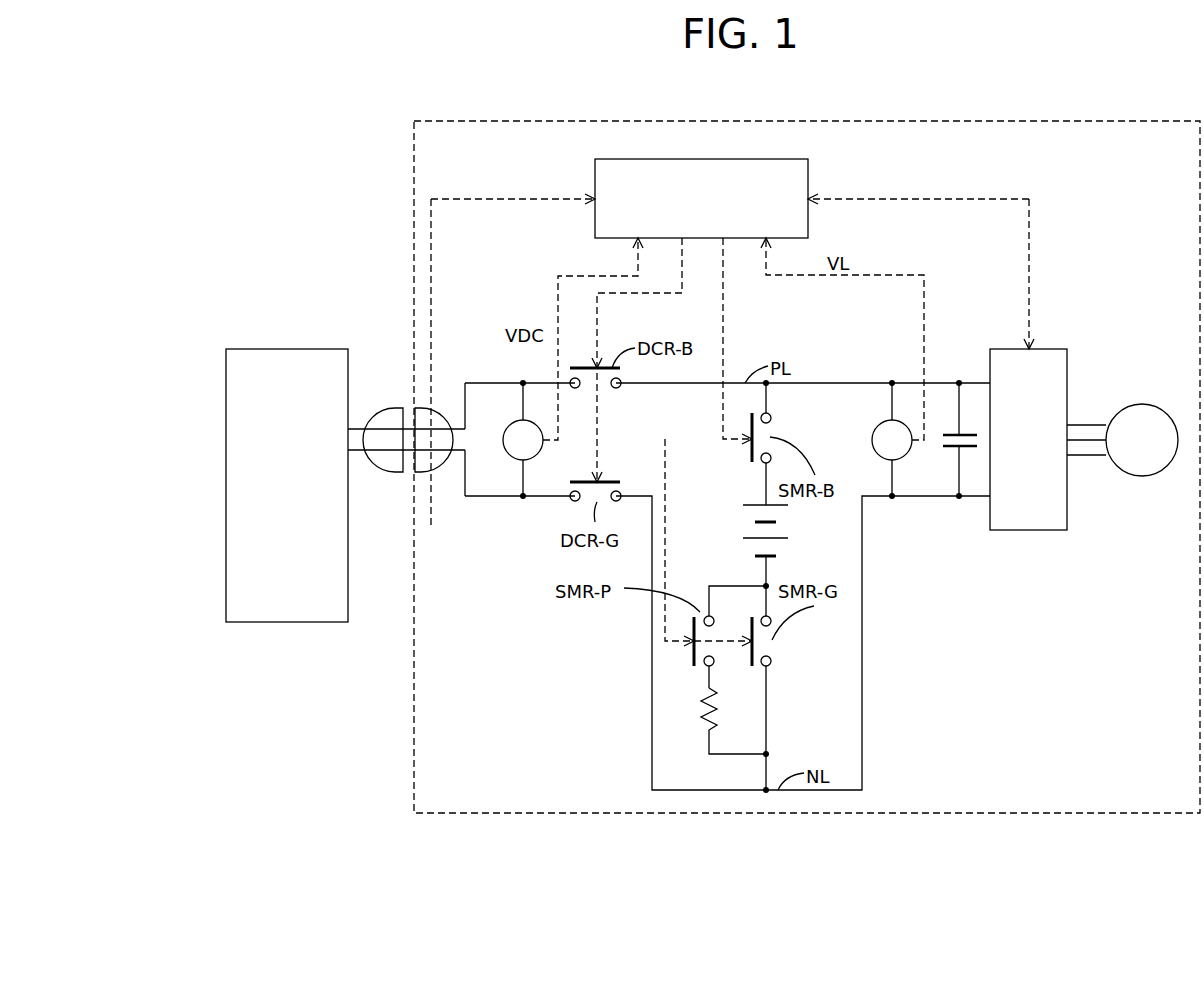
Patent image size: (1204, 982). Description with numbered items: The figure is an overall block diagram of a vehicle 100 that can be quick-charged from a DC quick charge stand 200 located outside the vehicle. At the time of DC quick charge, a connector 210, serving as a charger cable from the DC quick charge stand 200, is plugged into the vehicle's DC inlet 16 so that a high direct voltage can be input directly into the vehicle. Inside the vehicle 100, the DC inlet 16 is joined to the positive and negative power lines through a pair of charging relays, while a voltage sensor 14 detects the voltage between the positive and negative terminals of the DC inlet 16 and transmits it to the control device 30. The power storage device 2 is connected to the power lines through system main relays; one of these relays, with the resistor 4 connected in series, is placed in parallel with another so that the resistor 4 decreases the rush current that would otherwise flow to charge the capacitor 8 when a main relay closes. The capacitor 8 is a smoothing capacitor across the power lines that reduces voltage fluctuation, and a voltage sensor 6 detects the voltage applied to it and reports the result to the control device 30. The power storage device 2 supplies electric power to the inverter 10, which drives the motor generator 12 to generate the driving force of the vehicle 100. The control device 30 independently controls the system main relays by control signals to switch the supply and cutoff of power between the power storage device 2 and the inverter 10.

The vehicle 100 is at (452, 121).
The DC quick charge stand 200 is at (245, 622).
The connector 210 is at (380, 474).
The DC inlet 16 is at (437, 474).
The voltage sensor 14 is at (512, 425).
The control device 30 is at (768, 159).
The power storage device 2 is at (740, 522).
The resistor 4 is at (700, 707).
The voltage sensor 6 is at (876, 425).
The capacitor 8 is at (965, 430).
The inverter 10 is at (1050, 349).
The motor generator 12 is at (1140, 404).